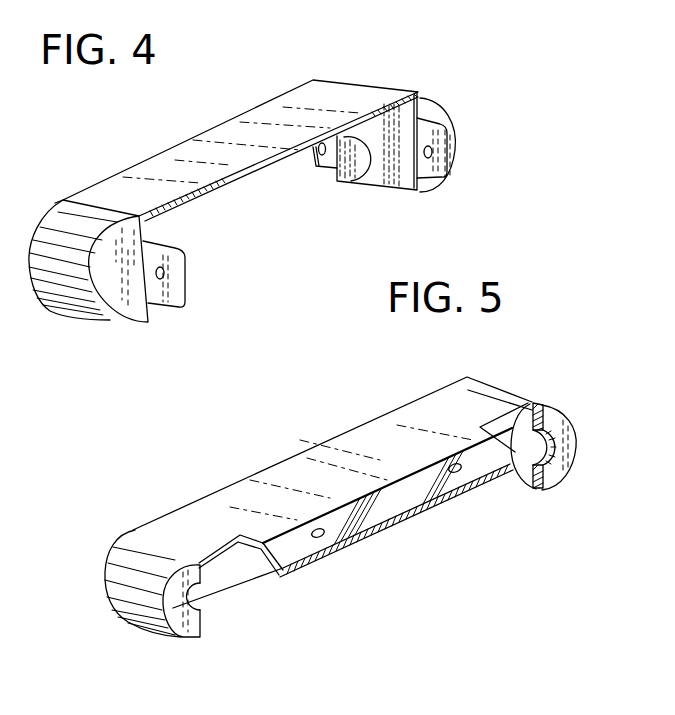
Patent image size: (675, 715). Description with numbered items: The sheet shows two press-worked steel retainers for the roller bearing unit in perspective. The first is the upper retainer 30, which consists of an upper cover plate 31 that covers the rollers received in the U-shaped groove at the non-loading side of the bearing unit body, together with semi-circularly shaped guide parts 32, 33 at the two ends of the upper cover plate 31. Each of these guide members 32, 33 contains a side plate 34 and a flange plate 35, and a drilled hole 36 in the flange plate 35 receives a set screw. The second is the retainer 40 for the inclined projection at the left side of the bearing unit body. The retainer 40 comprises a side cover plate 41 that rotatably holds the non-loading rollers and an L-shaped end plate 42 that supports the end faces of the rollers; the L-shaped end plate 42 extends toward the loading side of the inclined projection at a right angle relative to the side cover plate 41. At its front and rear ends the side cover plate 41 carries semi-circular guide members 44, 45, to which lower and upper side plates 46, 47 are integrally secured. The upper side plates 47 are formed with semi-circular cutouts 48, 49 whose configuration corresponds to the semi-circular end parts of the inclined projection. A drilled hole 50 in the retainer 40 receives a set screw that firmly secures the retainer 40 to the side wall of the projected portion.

In FIG. 4, the upper retainer 30 is at (371, 87).
In FIG. 4, the upper cover plate 31 is at (177, 150).
In FIG. 4, the semi-circularly shaped guide part 32 is at (73, 280).
In FIG. 4, the semi-circularly shaped guide part 33 is at (403, 178).
In FIG. 4, the side plate 34 is at (127, 315).
In FIG. 4, the flange plate 35 is at (175, 296).
In FIG. 4, the drilled hole 36 is at (165, 274).
In FIG. 5, the retainer 40 is at (393, 440).
In FIG. 5, the side cover plate 41 is at (190, 520).
In FIG. 5, the L-shaped end plate 42 is at (252, 565).
In FIG. 5, the semi-circular guide member 44 is at (115, 592).
In FIG. 5, the semi-circular guide member 45 is at (522, 468).
In FIG. 5, the lower side plate 46 is at (185, 636).
In FIG. 5, the upper side plate 47 is at (515, 418).
In FIG. 5, the semi-circular cutout 48 is at (560, 463).
In FIG. 5, the semi-circular cutout 49 is at (184, 632).
In FIG. 5, the drilled hole 50 is at (320, 538).